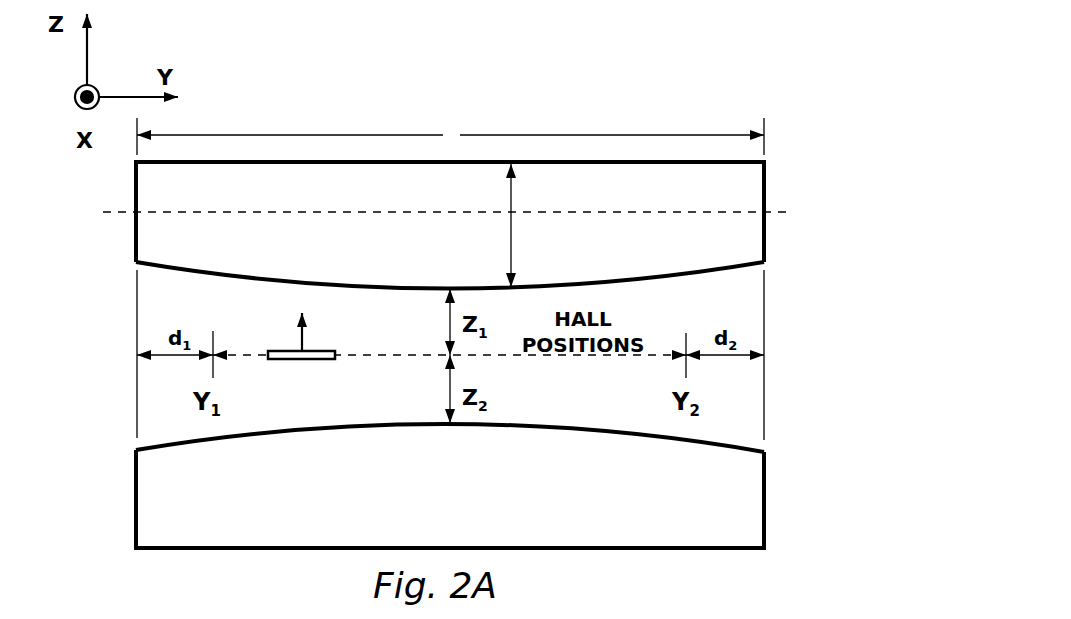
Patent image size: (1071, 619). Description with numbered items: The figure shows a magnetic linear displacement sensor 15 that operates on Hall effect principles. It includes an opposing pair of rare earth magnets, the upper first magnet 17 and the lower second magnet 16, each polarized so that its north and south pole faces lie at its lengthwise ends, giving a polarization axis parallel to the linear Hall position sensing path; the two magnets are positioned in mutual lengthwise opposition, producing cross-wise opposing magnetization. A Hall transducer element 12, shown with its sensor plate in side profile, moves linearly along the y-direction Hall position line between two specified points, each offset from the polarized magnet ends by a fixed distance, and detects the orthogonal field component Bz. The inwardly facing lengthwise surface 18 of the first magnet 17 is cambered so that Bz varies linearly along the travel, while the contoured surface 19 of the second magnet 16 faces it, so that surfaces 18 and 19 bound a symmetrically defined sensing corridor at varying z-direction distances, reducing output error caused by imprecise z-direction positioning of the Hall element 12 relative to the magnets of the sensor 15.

The Hall transducer element 12 is at (318, 361).
The magnetic linear displacement sensor 15 is at (684, 91).
The second magnet 16 is at (250, 551).
The top magnet 17 is at (121, 211).
The inwardly facing lengthwise surface of first magnet 18 is at (665, 278).
The contoured surface of second magnet 19 is at (302, 427).